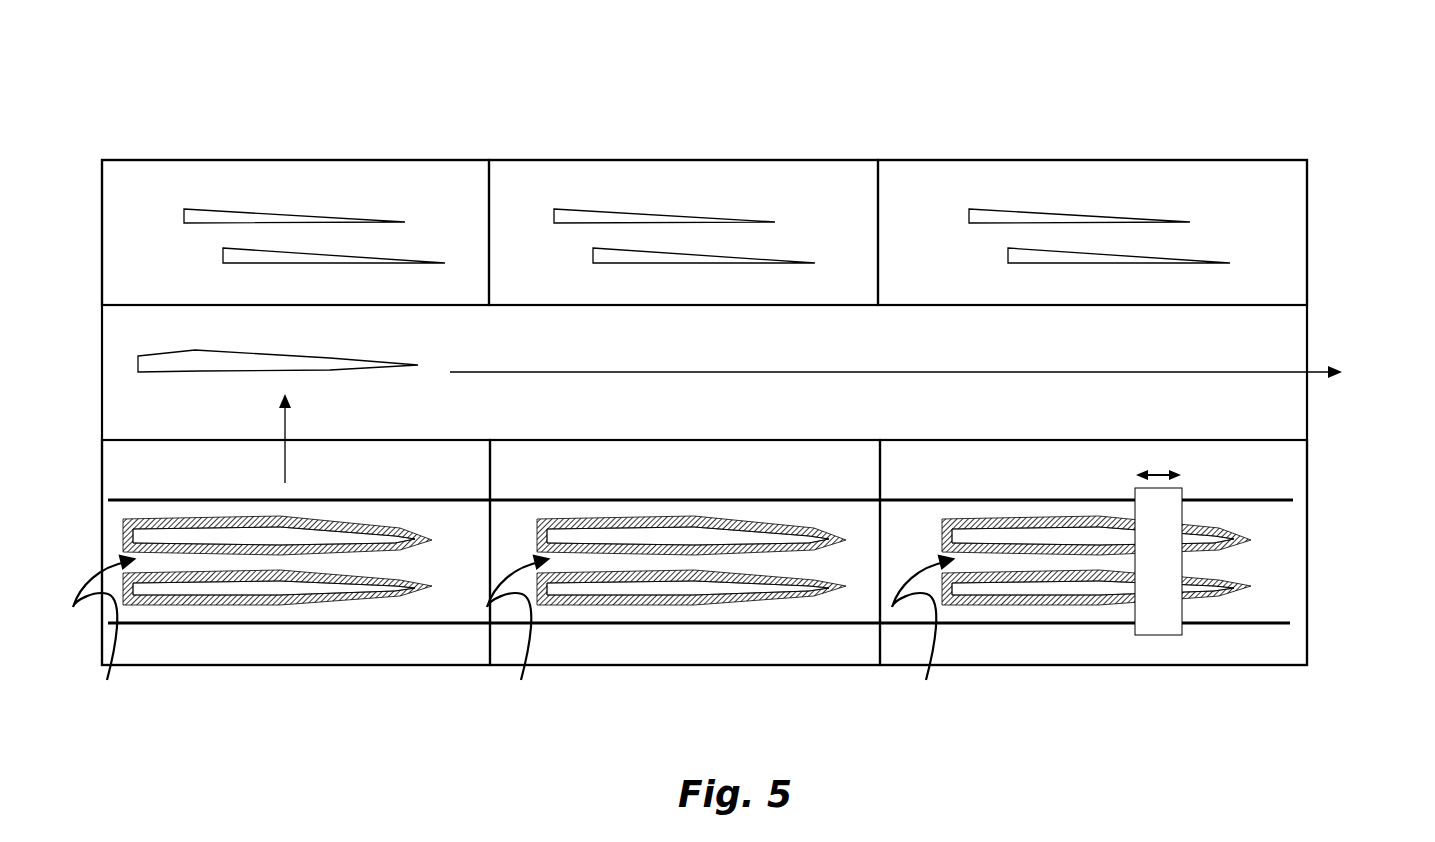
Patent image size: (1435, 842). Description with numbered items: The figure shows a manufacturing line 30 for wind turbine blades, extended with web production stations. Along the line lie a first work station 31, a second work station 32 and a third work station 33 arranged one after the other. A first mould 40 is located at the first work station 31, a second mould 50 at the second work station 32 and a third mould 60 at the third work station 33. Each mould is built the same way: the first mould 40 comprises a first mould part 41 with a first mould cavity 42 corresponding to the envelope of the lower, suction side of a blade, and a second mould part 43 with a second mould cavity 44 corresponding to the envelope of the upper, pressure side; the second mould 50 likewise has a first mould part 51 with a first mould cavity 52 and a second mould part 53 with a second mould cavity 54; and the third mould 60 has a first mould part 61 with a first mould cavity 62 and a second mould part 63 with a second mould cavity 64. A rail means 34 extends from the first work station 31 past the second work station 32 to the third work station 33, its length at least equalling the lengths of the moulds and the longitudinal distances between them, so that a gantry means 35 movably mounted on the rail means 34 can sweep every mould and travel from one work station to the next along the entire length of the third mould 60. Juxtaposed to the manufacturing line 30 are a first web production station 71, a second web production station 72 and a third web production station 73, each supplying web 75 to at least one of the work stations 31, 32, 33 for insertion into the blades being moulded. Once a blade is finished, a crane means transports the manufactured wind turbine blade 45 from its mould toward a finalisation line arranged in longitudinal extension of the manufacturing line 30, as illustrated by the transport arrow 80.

The manufacturing line 30 is at (1322, 619).
The first work station 31 is at (418, 645).
The second work station 32 is at (800, 640).
The third work station 33 is at (1235, 640).
The rail means 34 is at (1242, 497).
The gantry means 35 is at (1155, 625).
The first mould 40 is at (103, 640).
The first mould part 41 is at (175, 518).
The first mould cavity 42 is at (235, 530).
The second mould part 43 is at (178, 612).
The second mould cavity 44 is at (232, 592).
The wind turbine blade 45 is at (363, 353).
The second mould 50 is at (517, 639).
The first mould part 51 is at (589, 518).
The first mould cavity 52 is at (649, 530).
The second mould part 53 is at (592, 612).
The second mould cavity 54 is at (646, 592).
The third mould 60 is at (922, 639).
The first mould part 61 is at (998, 518).
The first mould cavity 62 is at (1057, 530).
The second mould part 63 is at (997, 612).
The second mould cavity 64 is at (1051, 592).
The first web production station 71 is at (445, 195).
The second web production station 72 is at (835, 190).
The third web production station 73 is at (1257, 195).
The web 75 is at (432, 262).
The transport arrow 80 is at (1318, 370).